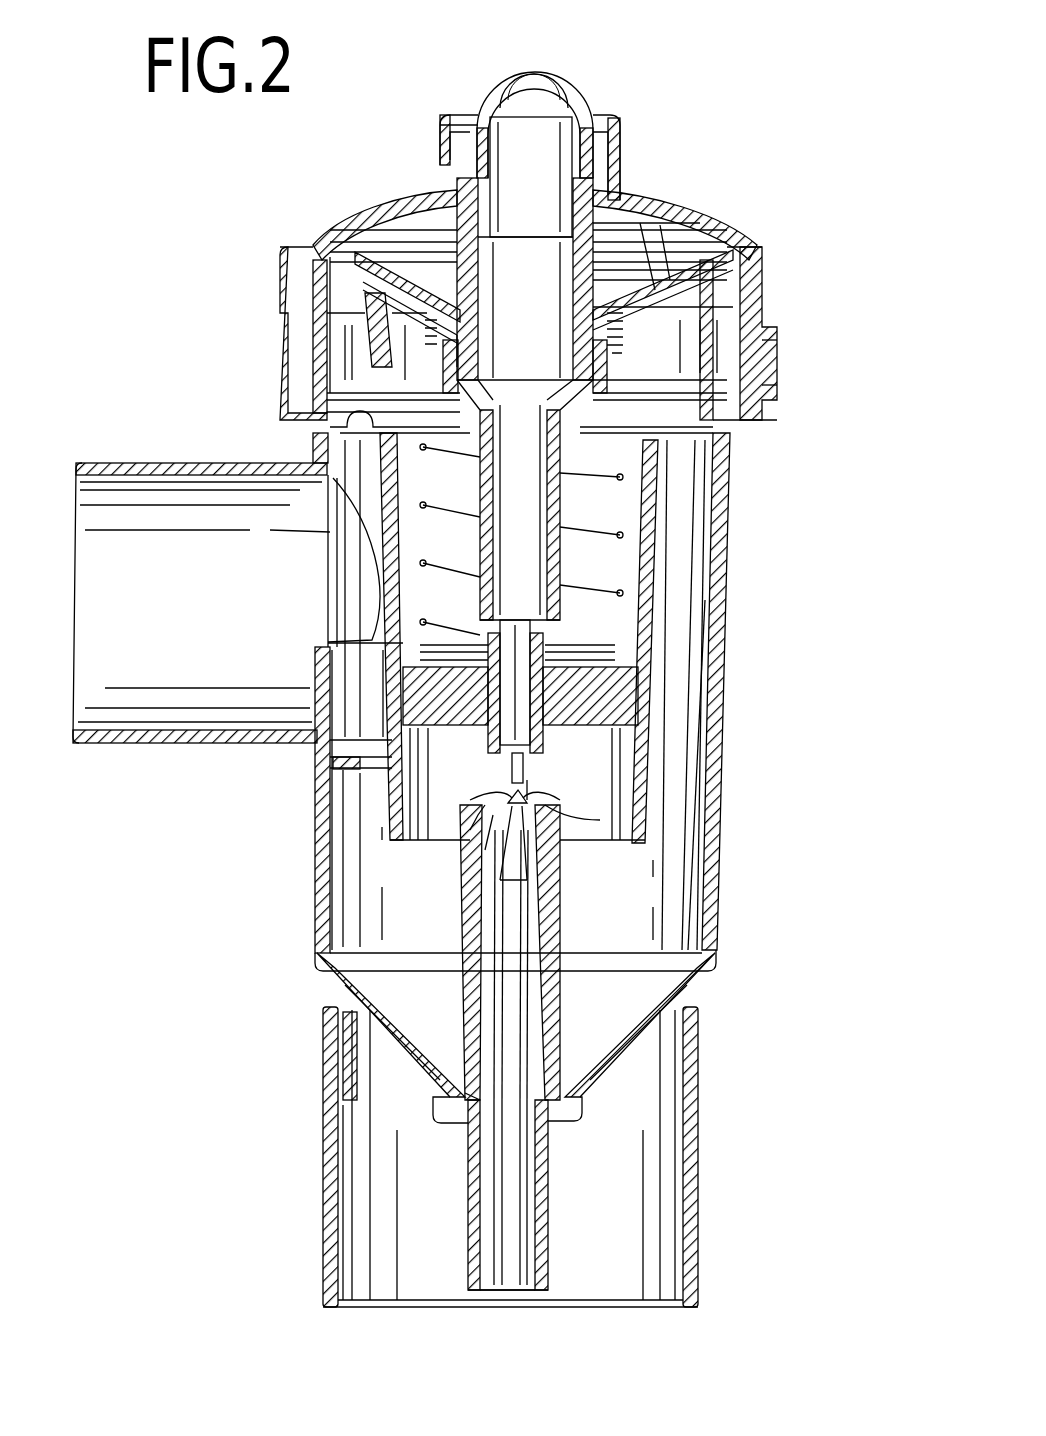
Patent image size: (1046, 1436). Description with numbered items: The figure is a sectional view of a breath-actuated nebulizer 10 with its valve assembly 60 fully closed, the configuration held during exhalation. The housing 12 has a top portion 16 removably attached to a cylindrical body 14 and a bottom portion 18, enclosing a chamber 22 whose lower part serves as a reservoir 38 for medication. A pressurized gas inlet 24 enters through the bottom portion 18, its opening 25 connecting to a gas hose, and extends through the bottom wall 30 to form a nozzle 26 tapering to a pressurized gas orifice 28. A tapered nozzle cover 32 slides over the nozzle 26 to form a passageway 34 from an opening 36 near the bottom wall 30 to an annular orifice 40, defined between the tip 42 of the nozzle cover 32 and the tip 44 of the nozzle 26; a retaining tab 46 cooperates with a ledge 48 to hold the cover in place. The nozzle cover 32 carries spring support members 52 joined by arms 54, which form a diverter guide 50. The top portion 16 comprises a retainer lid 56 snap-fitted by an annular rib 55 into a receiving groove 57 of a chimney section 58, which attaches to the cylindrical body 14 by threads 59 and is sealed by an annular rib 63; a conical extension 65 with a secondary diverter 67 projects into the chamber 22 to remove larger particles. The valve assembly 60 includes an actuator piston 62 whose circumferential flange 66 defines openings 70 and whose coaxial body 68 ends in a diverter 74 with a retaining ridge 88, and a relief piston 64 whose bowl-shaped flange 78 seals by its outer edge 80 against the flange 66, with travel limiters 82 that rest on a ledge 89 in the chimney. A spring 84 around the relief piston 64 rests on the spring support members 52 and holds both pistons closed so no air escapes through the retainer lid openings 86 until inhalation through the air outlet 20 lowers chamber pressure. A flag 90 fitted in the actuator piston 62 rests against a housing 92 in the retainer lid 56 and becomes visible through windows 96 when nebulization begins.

The nebulizer 10 is at (856, 578).
The housing 12 is at (736, 648).
The cylindrical body 14 is at (724, 591).
The top portion 16 is at (296, 240).
The bottom portion 18 is at (700, 1120).
The air outlet 20 is at (112, 462).
The chamber 22 is at (685, 778).
The pressurized gas inlet 24 is at (550, 1182).
The opening 25 is at (492, 1292).
The nozzle 26 is at (560, 818).
The pressurized gas orifice 28 is at (507, 805).
The bottom wall 30 is at (633, 1035).
The nozzle cover 32 is at (565, 905).
The passageway 34 is at (545, 1008).
The opening 36 is at (580, 1098).
The reservoir 38 is at (430, 1058).
The annular orifice 40 is at (510, 803).
The tip of the nozzle cover 42 is at (537, 793).
The tip of the nozzle 44 is at (647, 825).
The retaining tab 46 is at (470, 832).
The ledge 48 is at (487, 834).
The diverter guide 50 is at (462, 697).
The spring support members 52 is at (350, 645).
The arms 54 is at (512, 773).
The annular rib 55 is at (740, 250).
The retainer lid 56 is at (370, 200).
The receiving groove 57 is at (778, 262).
The chimney section 58 is at (278, 262).
The threads 59 is at (754, 372).
The valve assembly 60 is at (674, 333).
The actuator piston 62 is at (700, 236).
The annular rib 63 is at (716, 435).
The relief piston 64 is at (330, 297).
The conical extension 65 is at (382, 500).
The circumferential flange 66 is at (736, 258).
The secondary diverter 67 is at (333, 757).
The coaxial body 68 is at (592, 415).
The openings 70 is at (657, 262).
The diverter 74 is at (542, 770).
The circumferential flange 78 is at (625, 290).
The outer edge 80 is at (350, 278).
The travel limiters 82 is at (372, 328).
The spring 84 is at (620, 536).
The retainer lid openings 86 is at (412, 216).
The retaining ridge 88 is at (486, 636).
The ledge 89 is at (345, 422).
The flag 90 is at (518, 74).
The housing 92 is at (467, 112).
The windows 96 is at (616, 192).